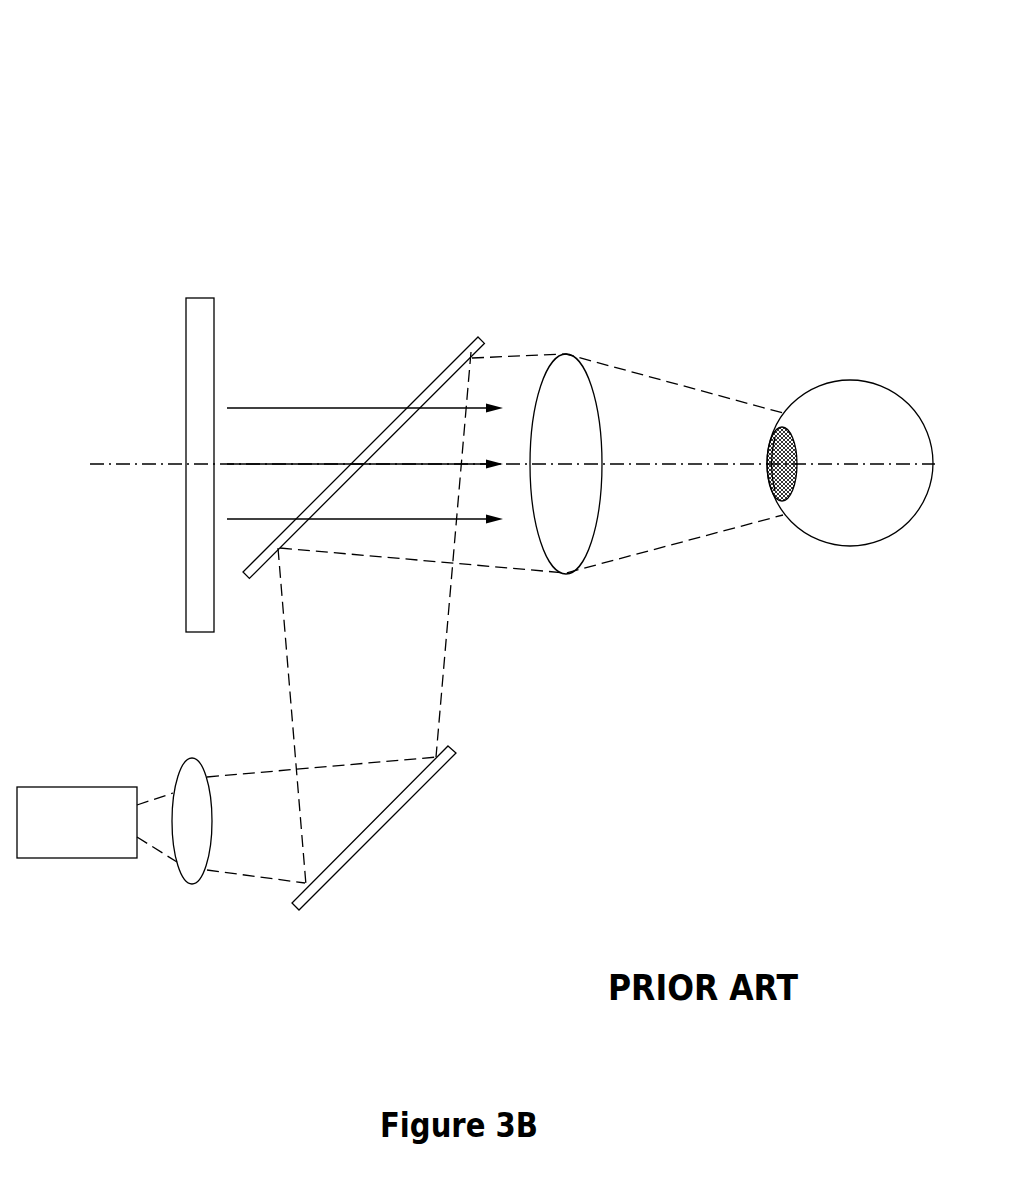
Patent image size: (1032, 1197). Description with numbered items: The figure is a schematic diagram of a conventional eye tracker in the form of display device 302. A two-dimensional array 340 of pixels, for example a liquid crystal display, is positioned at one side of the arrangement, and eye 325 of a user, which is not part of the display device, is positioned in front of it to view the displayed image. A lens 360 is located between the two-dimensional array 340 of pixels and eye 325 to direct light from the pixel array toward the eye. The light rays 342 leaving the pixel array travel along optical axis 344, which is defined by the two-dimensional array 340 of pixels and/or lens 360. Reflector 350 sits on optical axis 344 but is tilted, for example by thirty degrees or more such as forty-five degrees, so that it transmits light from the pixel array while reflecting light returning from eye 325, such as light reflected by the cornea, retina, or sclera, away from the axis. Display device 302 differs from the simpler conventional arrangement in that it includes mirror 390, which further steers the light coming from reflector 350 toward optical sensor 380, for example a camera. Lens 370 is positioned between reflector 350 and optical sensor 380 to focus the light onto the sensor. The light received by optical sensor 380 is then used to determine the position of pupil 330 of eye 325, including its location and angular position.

The display device 302 is at (197, 76).
The eye 325 is at (850, 380).
The pupil 330 is at (770, 452).
The two-dimensional array of pixels 340 is at (186, 342).
The display light rays 342 is at (342, 408).
The optical axis 344 is at (123, 467).
The reflector 350 is at (482, 337).
The lens 360 is at (580, 356).
The lens 370 is at (183, 885).
The optical sensor 380 is at (35, 860).
The mirror 390 is at (295, 910).